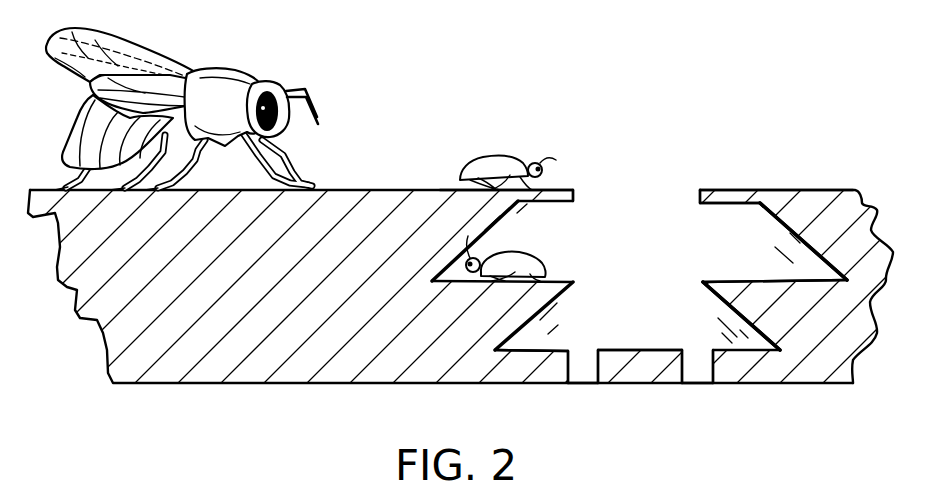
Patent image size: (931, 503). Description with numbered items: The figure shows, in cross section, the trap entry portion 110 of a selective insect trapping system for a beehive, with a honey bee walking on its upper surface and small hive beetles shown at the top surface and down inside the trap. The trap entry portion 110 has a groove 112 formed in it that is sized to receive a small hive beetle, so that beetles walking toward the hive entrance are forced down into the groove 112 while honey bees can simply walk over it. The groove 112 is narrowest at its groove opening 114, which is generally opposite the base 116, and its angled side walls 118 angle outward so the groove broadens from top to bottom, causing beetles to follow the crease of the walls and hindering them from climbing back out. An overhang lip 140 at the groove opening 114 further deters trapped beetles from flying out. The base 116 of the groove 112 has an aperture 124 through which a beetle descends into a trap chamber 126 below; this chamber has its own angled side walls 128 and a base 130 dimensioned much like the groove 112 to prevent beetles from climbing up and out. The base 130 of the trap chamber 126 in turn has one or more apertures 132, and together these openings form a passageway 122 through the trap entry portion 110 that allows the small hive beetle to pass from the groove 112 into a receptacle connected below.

The trap entry portion 110 is at (96, 262).
The groove 112 is at (692, 218).
The groove opening 114 is at (615, 203).
The base 116 is at (780, 268).
The angled side walls 118 is at (776, 280).
The passageway 122 is at (602, 285).
The aperture 124 is at (668, 268).
The trap chamber 126 is at (626, 325).
The angled side walls 128 is at (752, 322).
The base 130 is at (492, 368).
The apertures 132 is at (705, 377).
The overhang lip 140 is at (560, 186).